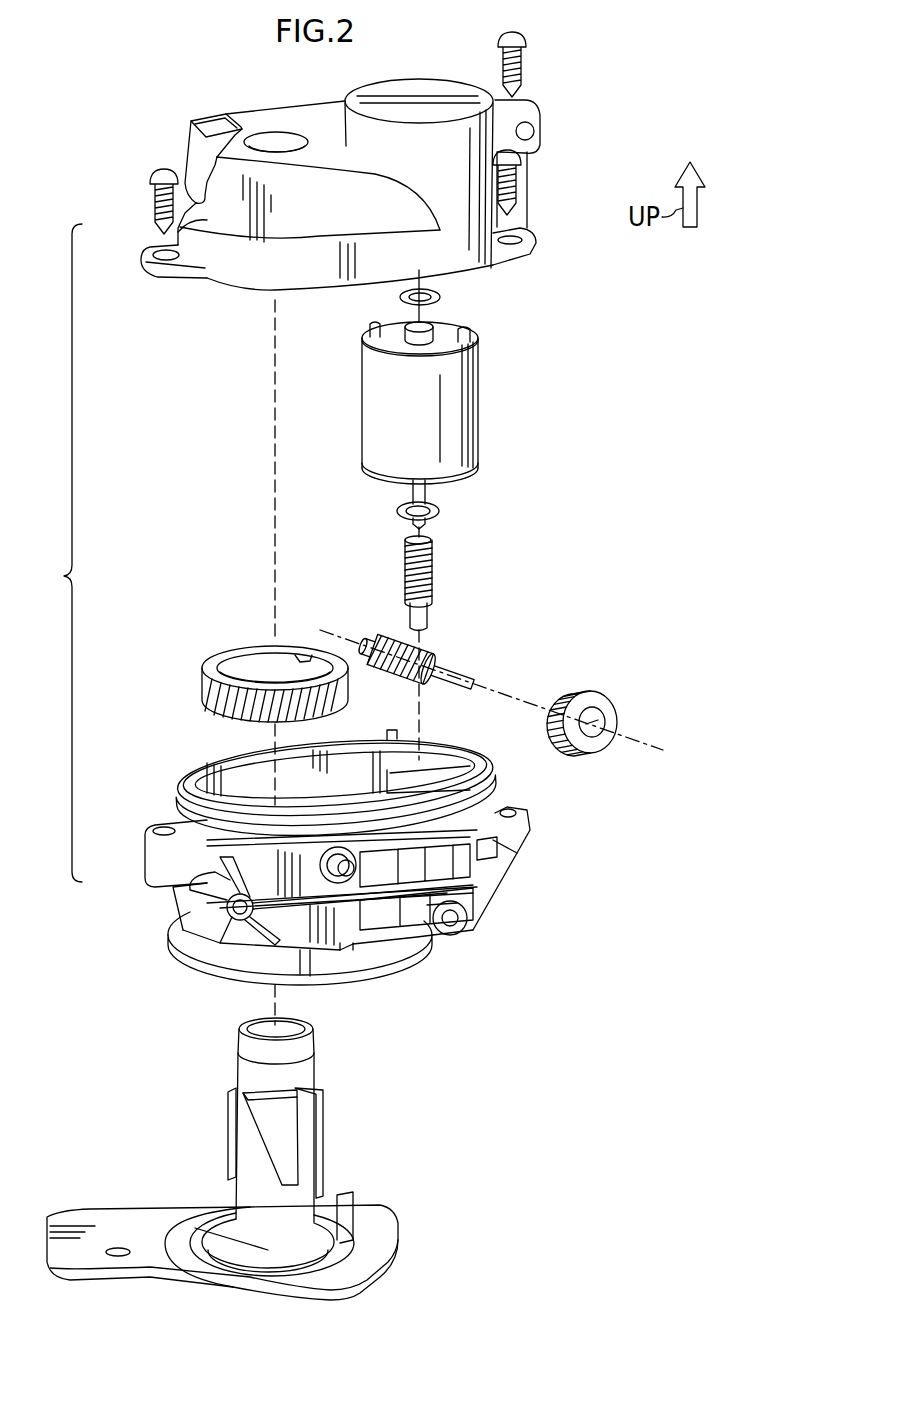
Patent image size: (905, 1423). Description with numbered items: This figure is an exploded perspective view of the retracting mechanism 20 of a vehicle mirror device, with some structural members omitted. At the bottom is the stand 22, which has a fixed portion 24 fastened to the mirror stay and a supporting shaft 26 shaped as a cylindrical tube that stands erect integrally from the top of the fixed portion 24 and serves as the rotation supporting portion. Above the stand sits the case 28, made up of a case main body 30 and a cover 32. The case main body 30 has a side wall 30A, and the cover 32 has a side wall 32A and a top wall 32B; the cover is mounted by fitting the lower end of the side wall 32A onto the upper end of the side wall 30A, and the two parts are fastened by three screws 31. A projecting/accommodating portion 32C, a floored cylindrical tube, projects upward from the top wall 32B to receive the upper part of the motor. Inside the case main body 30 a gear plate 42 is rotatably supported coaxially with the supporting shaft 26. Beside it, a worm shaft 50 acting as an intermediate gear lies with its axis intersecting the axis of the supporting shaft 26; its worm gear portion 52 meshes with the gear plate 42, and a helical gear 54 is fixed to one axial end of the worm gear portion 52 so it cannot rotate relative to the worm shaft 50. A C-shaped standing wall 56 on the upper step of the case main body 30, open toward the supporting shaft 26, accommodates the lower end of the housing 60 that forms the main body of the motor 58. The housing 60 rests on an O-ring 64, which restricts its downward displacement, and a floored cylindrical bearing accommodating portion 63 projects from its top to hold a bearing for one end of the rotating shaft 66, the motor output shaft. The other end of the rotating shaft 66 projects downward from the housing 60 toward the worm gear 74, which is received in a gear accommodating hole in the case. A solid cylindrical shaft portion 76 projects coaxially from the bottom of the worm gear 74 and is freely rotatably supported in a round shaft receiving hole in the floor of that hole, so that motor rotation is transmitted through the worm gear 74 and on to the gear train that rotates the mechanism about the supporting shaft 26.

The retracting mechanism 20 is at (594, 440).
The stand 22 is at (115, 1205).
The fixed portion 24 is at (167, 1205).
The supporting shaft 26 is at (327, 1129).
The case 28 is at (54, 553).
The case main body 30 is at (152, 855).
The side wall 30A is at (340, 938).
The screws 31 is at (520, 62).
The cover 32 is at (207, 222).
The side wall 32A is at (311, 265).
The top wall 32B is at (320, 128).
The projecting/accommodating portion 32C is at (418, 90).
The gear plate 42 is at (205, 683).
The worm shaft 50 is at (458, 668).
The worm gear portion 52 is at (422, 658).
The helical gear 54 is at (598, 695).
The standing wall 56 is at (447, 742).
The motor 58 is at (480, 375).
The housing 60 is at (456, 413).
The bearing accommodating portion 63 is at (405, 339).
The O-ring 64 is at (441, 297).
The rotating shaft 66 is at (426, 493).
The worm gear 74 is at (405, 570).
The shaft portion 76 is at (410, 615).